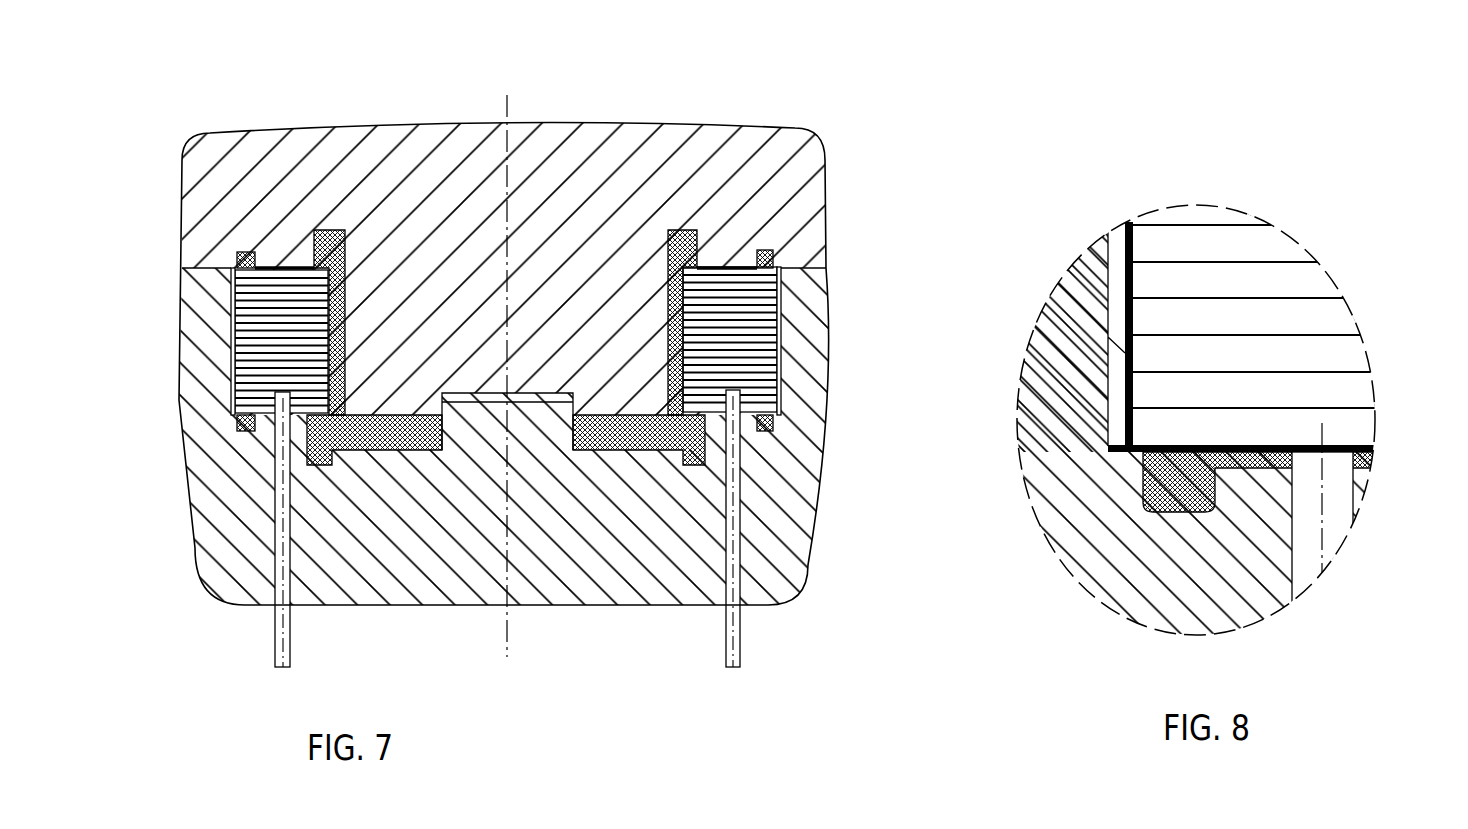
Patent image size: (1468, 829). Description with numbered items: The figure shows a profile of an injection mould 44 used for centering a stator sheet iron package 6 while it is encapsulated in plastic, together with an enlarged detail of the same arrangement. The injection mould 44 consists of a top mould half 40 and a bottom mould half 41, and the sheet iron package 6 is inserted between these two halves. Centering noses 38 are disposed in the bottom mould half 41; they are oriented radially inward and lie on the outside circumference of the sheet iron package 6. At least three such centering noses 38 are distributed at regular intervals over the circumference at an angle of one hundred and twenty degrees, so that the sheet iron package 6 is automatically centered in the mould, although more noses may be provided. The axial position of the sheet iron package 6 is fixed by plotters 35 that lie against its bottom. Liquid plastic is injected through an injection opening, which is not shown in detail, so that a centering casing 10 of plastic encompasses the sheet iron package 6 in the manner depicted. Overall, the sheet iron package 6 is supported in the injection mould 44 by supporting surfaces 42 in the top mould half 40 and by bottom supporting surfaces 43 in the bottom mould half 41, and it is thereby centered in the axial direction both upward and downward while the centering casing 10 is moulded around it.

In FIG. 7, the sheet iron package 6 is at (270, 338).
In FIG. 8, the sheet iron package 6 is at (1295, 386).
In FIG. 7, the centering casing 10 is at (599, 452).
In FIG. 7, the plotters 35 is at (727, 563).
In FIG. 8, the plotters 35 is at (1333, 503).
In FIG. 7, the centering noses 38 is at (780, 390).
In FIG. 8, the centering noses 38 is at (1110, 412).
In FIG. 7, the top mould half 40 is at (727, 175).
In FIG. 7, the bottom mould half 41 is at (770, 570).
In FIG. 7, the supporting surfaces 42 is at (232, 253).
In FIG. 7, the bottom supporting surfaces 43 is at (273, 420).
In FIG. 7, the injection mould 44 is at (824, 121).